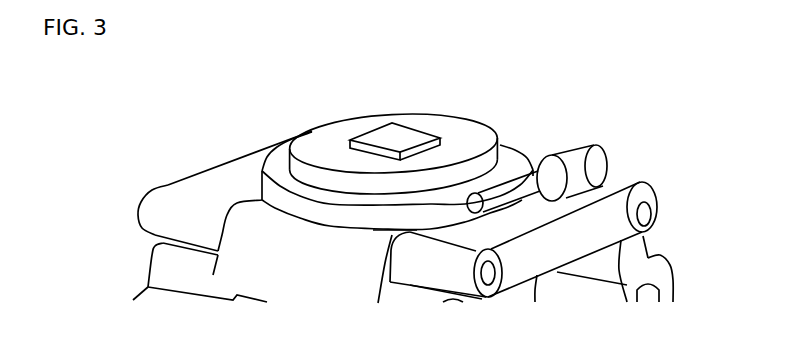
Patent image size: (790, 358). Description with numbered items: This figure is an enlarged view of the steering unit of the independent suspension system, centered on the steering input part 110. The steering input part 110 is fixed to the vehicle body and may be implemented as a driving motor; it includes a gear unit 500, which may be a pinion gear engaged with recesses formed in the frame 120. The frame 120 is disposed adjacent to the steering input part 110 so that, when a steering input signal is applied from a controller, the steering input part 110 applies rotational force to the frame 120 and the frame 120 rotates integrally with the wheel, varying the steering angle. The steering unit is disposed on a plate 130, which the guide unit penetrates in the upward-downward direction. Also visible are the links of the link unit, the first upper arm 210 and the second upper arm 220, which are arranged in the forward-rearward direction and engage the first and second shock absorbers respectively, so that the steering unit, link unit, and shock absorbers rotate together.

The gear unit 500 is at (490, 190).
The frame 120 is at (510, 152).
The steering input part 110 is at (588, 153).
The plate 130 is at (615, 215).
The second upper arm 220 is at (160, 277).
The first upper arm 210 is at (660, 260).